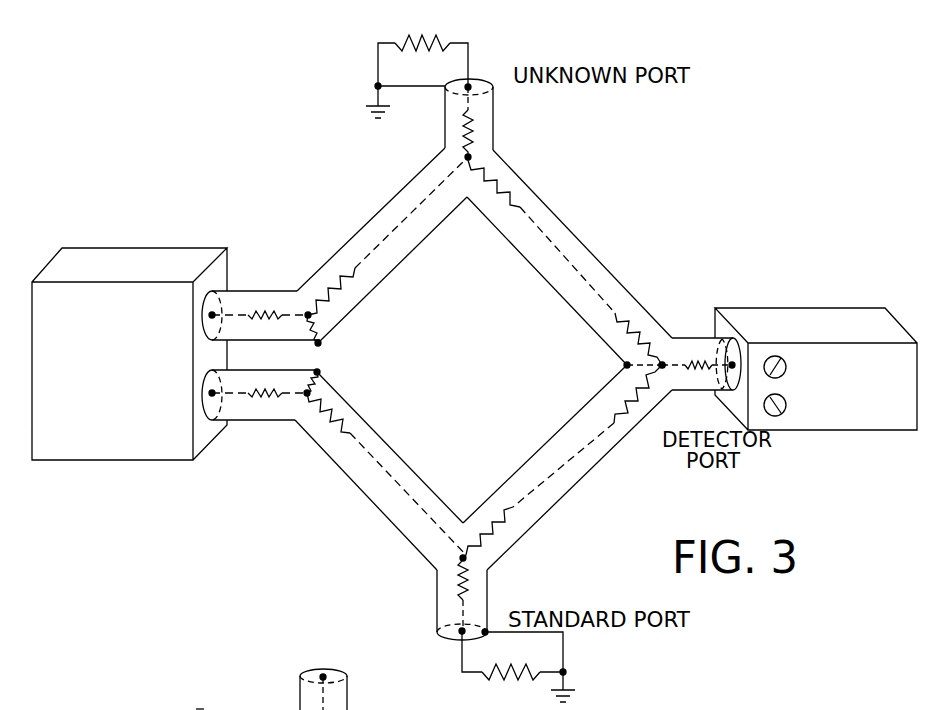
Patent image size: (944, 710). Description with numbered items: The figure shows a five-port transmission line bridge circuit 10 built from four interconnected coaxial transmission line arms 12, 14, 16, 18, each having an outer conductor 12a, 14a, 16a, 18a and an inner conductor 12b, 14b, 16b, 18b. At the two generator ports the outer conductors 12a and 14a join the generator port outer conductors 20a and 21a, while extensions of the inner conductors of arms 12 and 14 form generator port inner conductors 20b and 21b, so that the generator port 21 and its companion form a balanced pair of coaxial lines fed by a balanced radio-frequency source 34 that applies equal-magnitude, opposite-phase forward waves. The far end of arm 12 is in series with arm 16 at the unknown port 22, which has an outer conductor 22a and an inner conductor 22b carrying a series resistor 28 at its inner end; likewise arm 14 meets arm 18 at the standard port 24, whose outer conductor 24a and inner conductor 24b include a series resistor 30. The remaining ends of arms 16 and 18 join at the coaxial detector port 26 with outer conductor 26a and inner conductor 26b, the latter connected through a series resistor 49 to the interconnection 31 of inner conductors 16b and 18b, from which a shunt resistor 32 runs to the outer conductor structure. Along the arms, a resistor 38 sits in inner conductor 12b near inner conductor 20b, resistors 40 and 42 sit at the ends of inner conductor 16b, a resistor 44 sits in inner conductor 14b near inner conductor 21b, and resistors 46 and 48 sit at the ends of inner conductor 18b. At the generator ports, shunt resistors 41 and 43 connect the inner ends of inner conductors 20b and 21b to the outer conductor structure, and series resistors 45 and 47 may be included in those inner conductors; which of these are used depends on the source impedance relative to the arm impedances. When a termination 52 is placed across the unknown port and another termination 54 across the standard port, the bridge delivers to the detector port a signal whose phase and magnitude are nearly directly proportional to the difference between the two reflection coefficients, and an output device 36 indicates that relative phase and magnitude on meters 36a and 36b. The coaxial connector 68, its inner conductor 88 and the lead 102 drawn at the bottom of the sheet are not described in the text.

The transmission line bridge circuit 10 is at (288, 154).
The coaxial transmission line arm 12 is at (376, 201).
The outer conductor 12a is at (333, 247).
The inner conductor 12b is at (397, 229).
The coaxial transmission line arm 14 is at (359, 502).
The outer conductor 14a is at (412, 468).
The inner conductor 14b is at (383, 464).
The coaxial transmission line arm 16 is at (597, 243).
The outer conductor 16a is at (578, 326).
The inner conductor 16b is at (570, 262).
The coaxial transmission line arm 18 is at (576, 486).
The outer conductor 18a is at (520, 463).
The inner conductor 18b is at (567, 452).
The generator port outer conductor 20a is at (267, 288).
The generator port inner conductor 20b is at (237, 313).
The generator port 21 is at (277, 435).
The generator port outer conductor 21a is at (257, 424).
The generator port inner conductor 21b is at (235, 423).
The unknown port 22 is at (505, 130).
The unknown port outer conductor 22a is at (442, 116).
The unknown port inner conductor 22b is at (472, 84).
The standard port 24 is at (433, 598).
The standard port outer conductor 24a is at (491, 580).
The standard port inner conductor 24b is at (458, 617).
The detector port 26 is at (698, 325).
The detector port outer conductor 26a is at (680, 334).
The detector port inner conductor 26b is at (722, 336).
The series resistor 28 is at (458, 135).
The resistor 30 is at (468, 607).
The interconnection 31 is at (663, 368).
The resistor 32 is at (623, 368).
The source 34 is at (123, 248).
The output device 36 is at (861, 431).
The meter 36a is at (778, 357).
The meter 36b is at (777, 418).
The resistor 38 is at (370, 290).
The resistor 40 is at (518, 204).
The shunt resistor 41 is at (328, 330).
The resistor 42 is at (622, 310).
The shunt resistor 43 is at (322, 382).
The resistor 44 is at (353, 408).
The series resistor 45 is at (255, 322).
The resistor 46 is at (518, 522).
The series resistor 47 is at (264, 388).
The resistor 48 is at (618, 432).
The series resistor 49 is at (698, 372).
The termination 52 is at (417, 40).
The termination 54 is at (514, 684).
The coaxial connector 68 is at (354, 707).
The inner conductor of connector 88 is at (297, 708).
The lead 102 is at (200, 709).